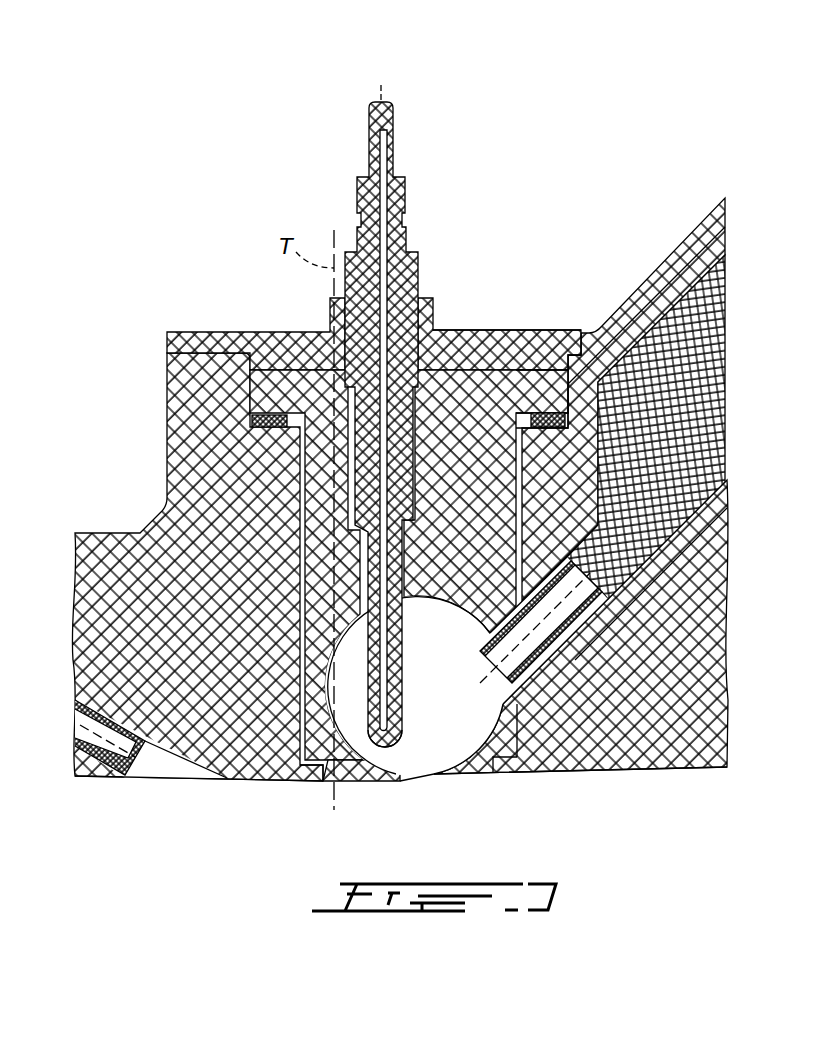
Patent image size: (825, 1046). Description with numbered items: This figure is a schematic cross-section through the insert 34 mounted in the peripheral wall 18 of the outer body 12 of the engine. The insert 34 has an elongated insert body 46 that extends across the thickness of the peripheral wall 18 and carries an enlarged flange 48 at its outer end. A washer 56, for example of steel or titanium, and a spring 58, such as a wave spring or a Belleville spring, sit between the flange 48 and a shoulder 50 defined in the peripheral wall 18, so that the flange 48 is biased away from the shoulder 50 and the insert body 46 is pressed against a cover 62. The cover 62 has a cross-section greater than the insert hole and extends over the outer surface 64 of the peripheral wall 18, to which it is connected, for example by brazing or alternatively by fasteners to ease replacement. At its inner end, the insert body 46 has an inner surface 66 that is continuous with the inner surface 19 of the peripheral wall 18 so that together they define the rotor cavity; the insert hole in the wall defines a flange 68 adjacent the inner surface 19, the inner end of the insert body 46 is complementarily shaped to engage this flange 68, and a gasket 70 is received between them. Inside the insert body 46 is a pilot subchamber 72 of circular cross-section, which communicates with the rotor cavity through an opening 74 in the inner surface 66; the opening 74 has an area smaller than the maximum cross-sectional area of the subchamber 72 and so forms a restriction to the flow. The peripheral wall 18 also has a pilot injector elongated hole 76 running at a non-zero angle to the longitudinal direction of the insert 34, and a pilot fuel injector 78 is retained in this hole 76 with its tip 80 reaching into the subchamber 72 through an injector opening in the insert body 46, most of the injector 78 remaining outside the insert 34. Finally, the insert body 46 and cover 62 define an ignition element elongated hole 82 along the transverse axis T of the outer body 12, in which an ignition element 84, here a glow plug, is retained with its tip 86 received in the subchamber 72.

The outer body 12 is at (155, 521).
The peripheral wall 18 is at (693, 621).
The inner surface 19 is at (648, 790).
The insert 34 is at (528, 318).
The insert body 46 is at (467, 423).
The enlarged flange 48 is at (550, 397).
The shoulder 50 is at (565, 360).
The washer 56 is at (548, 420).
The spring 58 is at (565, 428).
The cover 62 is at (253, 350).
The outer surface 64 is at (362, 308).
The inner surface 66 is at (357, 787).
The flange 68 is at (497, 763).
The gasket 70 is at (540, 735).
The pilot subchamber 72 is at (428, 680).
The opening 74 is at (423, 770).
The pilot injector elongated hole 76 is at (660, 538).
The pilot fuel injector 78 is at (710, 498).
The tip 80 is at (540, 643).
The ignition element elongated hole 82 is at (380, 347).
The ignition element 84 is at (398, 115).
The tip 86 is at (383, 731).